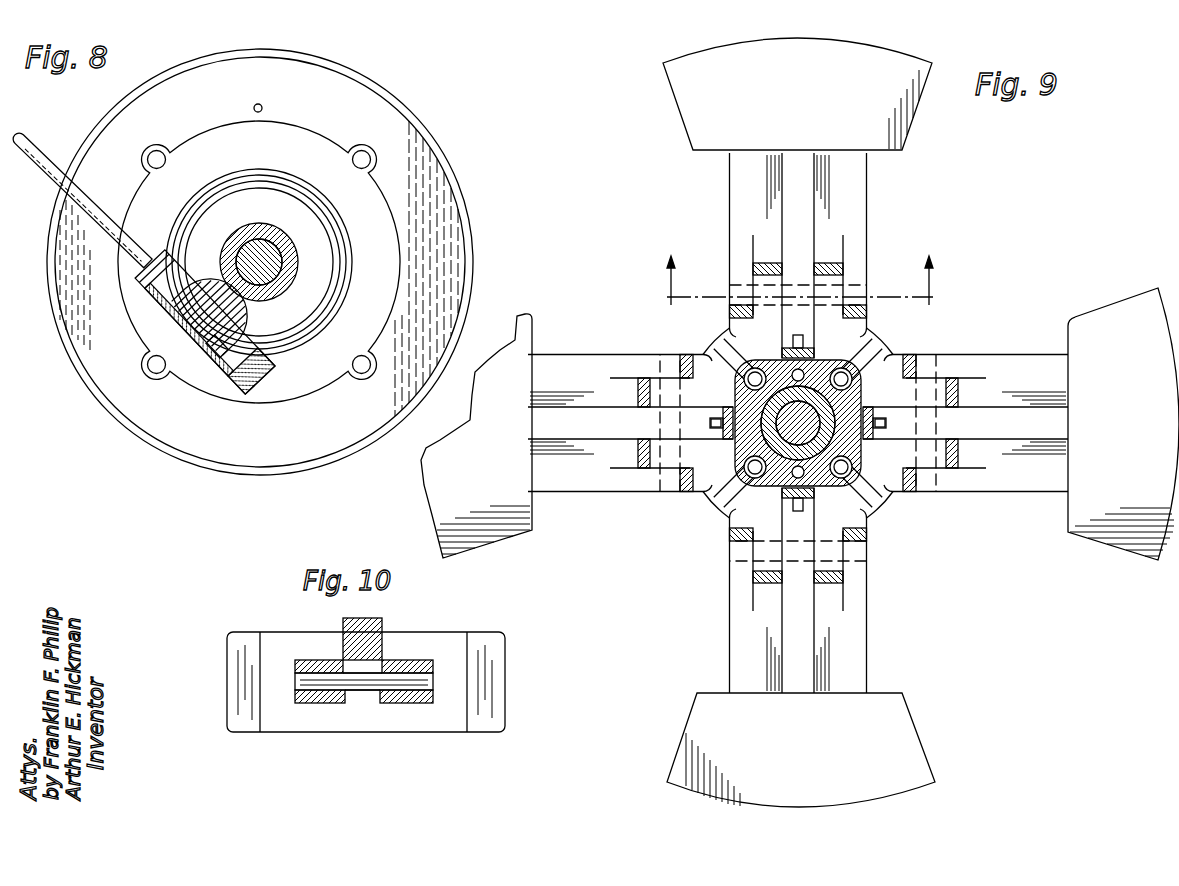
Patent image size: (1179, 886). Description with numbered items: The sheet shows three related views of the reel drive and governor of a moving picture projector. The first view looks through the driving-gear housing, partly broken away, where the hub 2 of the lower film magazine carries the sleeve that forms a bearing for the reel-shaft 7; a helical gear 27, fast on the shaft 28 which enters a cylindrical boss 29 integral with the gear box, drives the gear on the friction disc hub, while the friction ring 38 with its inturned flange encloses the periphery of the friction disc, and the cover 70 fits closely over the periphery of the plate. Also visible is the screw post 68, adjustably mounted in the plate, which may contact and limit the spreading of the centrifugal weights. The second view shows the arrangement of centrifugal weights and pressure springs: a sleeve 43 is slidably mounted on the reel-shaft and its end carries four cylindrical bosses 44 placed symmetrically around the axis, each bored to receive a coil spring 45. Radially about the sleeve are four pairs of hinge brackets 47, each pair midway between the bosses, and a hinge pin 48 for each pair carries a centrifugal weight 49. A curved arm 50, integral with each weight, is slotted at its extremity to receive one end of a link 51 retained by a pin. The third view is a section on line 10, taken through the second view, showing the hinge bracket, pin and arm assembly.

In FIG. 8, the hub 2 is at (284, 262).
In FIG. 8, the reel-shaft 7 is at (280, 291).
In FIG. 9, the key pin 10 is at (789, 280).
In FIG. 8, the helical gear 27 is at (205, 348).
In FIG. 8, the shaft 28 is at (36, 148).
In FIG. 8, the cylindrical boss 29 is at (262, 384).
In FIG. 8, the friction ring 38 is at (145, 340).
In FIG. 9, the sleeve 43 is at (814, 423).
In FIG. 9, the cylindrical bosses 44 is at (824, 412).
In FIG. 9, the coil spring 45 is at (800, 432).
In FIG. 9, the hinge brackets 47 is at (798, 426).
In FIG. 10, the hinge brackets 47 is at (337, 706).
In FIG. 9, the hinge pin 48 is at (798, 427).
In FIG. 10, the hinge pin 48 is at (372, 683).
In FIG. 9, the centrifugal weight 49 is at (700, 137).
In FIG. 10, the centrifugal weight 49 is at (480, 640).
In FIG. 9, the curved arm 50 is at (798, 423).
In FIG. 10, the curved arm 50 is at (372, 625).
In FIG. 9, the link 51 is at (826, 417).
In FIG. 8, the screw post 68 is at (262, 105).
In FIG. 8, the cover 70 is at (128, 430).